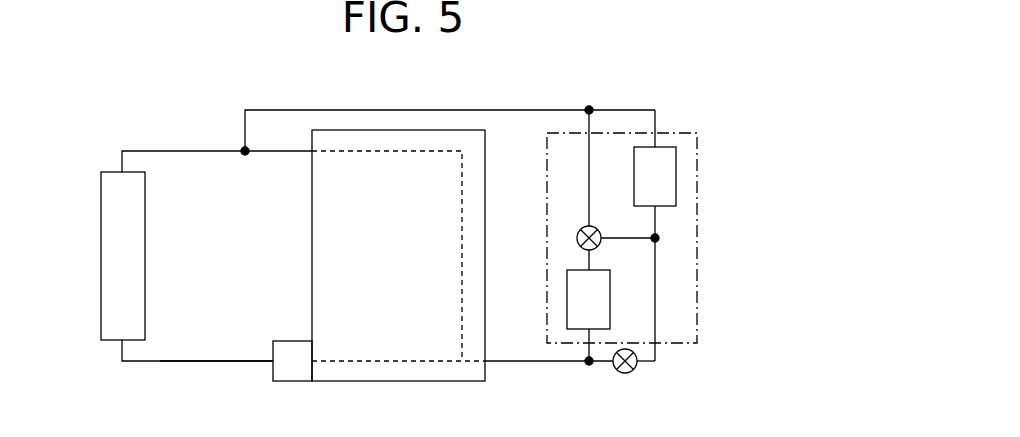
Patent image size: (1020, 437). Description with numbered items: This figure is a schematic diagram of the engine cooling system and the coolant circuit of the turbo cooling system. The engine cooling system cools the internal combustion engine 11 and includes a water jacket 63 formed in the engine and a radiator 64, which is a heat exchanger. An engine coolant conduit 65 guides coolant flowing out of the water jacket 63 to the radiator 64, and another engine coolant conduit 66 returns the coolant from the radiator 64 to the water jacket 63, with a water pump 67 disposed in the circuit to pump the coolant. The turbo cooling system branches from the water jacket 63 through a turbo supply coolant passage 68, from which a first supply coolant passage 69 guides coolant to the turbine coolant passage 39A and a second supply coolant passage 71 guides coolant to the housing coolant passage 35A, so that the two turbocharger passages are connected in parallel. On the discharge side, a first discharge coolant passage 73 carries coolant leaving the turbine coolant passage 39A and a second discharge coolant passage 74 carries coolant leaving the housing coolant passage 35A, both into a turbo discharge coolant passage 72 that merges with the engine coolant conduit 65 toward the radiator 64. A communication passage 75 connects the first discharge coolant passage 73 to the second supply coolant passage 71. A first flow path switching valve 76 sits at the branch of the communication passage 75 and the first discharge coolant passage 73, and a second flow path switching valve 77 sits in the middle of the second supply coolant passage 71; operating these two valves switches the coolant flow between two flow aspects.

The internal combustion engine 11 is at (312, 248).
The housing coolant passage 35A is at (677, 174).
The turbine coolant passage 39A is at (567, 294).
The water jacket 63 is at (347, 361).
The radiator 64 is at (101, 251).
The engine coolant conduit 65 is at (227, 151).
The engine coolant conduit 66 is at (203, 361).
The water pump 67 is at (273, 381).
The turbo supply coolant passage 68 is at (523, 364).
The first supply coolant passage 69 is at (588, 361).
The second supply coolant passage 71 is at (647, 364).
The turbo discharge coolant passage 72 is at (408, 110).
The first discharge coolant passage 73 is at (589, 198).
The second discharge coolant passage 74 is at (656, 121).
The communication passage 75 is at (623, 240).
The first flow path switching valve 76 is at (577, 238).
The second flow path switching valve 77 is at (636, 352).